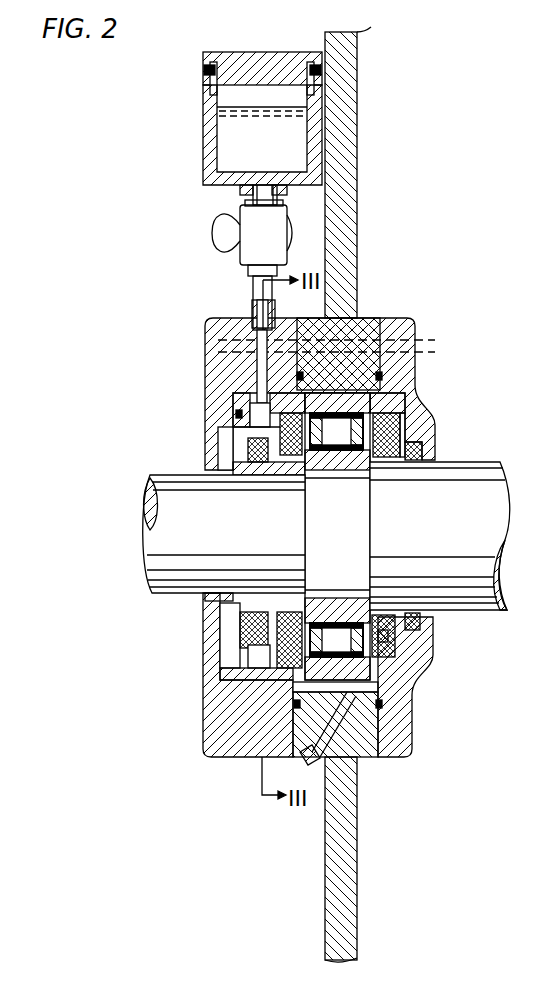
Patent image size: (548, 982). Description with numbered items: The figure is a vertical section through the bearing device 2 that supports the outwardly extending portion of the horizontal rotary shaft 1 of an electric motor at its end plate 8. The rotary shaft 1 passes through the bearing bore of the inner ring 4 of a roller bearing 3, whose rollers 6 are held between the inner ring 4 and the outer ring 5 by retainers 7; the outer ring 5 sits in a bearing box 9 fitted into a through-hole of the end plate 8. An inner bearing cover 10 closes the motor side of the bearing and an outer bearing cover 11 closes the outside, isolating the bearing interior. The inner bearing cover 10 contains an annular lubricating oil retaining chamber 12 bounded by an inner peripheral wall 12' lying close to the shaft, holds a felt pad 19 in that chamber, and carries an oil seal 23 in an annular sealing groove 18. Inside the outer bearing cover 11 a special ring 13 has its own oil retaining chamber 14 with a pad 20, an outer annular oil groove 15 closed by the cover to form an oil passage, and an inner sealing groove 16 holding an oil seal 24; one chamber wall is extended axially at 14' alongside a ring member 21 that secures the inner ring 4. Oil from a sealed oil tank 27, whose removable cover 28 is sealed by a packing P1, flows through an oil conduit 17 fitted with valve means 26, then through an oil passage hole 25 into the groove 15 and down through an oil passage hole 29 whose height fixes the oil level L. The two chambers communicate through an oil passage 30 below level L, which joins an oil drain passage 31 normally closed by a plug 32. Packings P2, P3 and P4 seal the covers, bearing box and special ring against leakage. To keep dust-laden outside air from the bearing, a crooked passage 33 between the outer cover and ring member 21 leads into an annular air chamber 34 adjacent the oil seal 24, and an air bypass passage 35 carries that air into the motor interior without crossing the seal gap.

The rotary shaft 1 is at (495, 522).
The bearing device 2 is at (92, 535).
The roller bearing 3 is at (344, 530).
The inner ring 4 is at (385, 645).
The outer ring 5 is at (370, 398).
The rollers 6 is at (385, 690).
The retainers 7 is at (386, 413).
The end plate 8 is at (355, 872).
The bearing box 9 is at (368, 332).
The inner bearing cover 10 is at (405, 745).
The outer bearing cover 11 is at (210, 745).
The lubricating oil retaining chamber 12 is at (388, 417).
The inner peripheral wall 12' is at (363, 585).
The special ring 13 is at (275, 427).
The lubricating oil retaining chamber 14 is at (177, 407).
The extended side wall 14' is at (276, 475).
The annular oil groove 15 is at (258, 658).
The annular sealing groove 16 is at (265, 632).
The oil conduit 17 is at (253, 290).
The annular sealing groove 18 is at (423, 452).
The pad 19 is at (405, 445).
The oil retaining pad 20 is at (293, 687).
The ring member 21 is at (228, 600).
The oil seal 23 is at (421, 622).
The oil seal 24 is at (248, 450).
The oil passage hole 25 is at (256, 372).
The valve means 26 is at (258, 237).
The oil tank 27 is at (208, 132).
The cover 28 is at (252, 57).
The oil passage hole 29 is at (250, 667).
The oil passage 30 is at (340, 735).
The oil drain passage 31 is at (330, 765).
The plug 32 is at (305, 770).
The crooked passage 33 is at (233, 468).
The annular air chamber 34 is at (222, 622).
The air bypass passage 35 is at (215, 342).
The packing P1 is at (205, 70).
The packing P2 is at (383, 705).
The packing P3 is at (306, 376).
The packing P4 is at (236, 414).
The oil level L is at (390, 640).